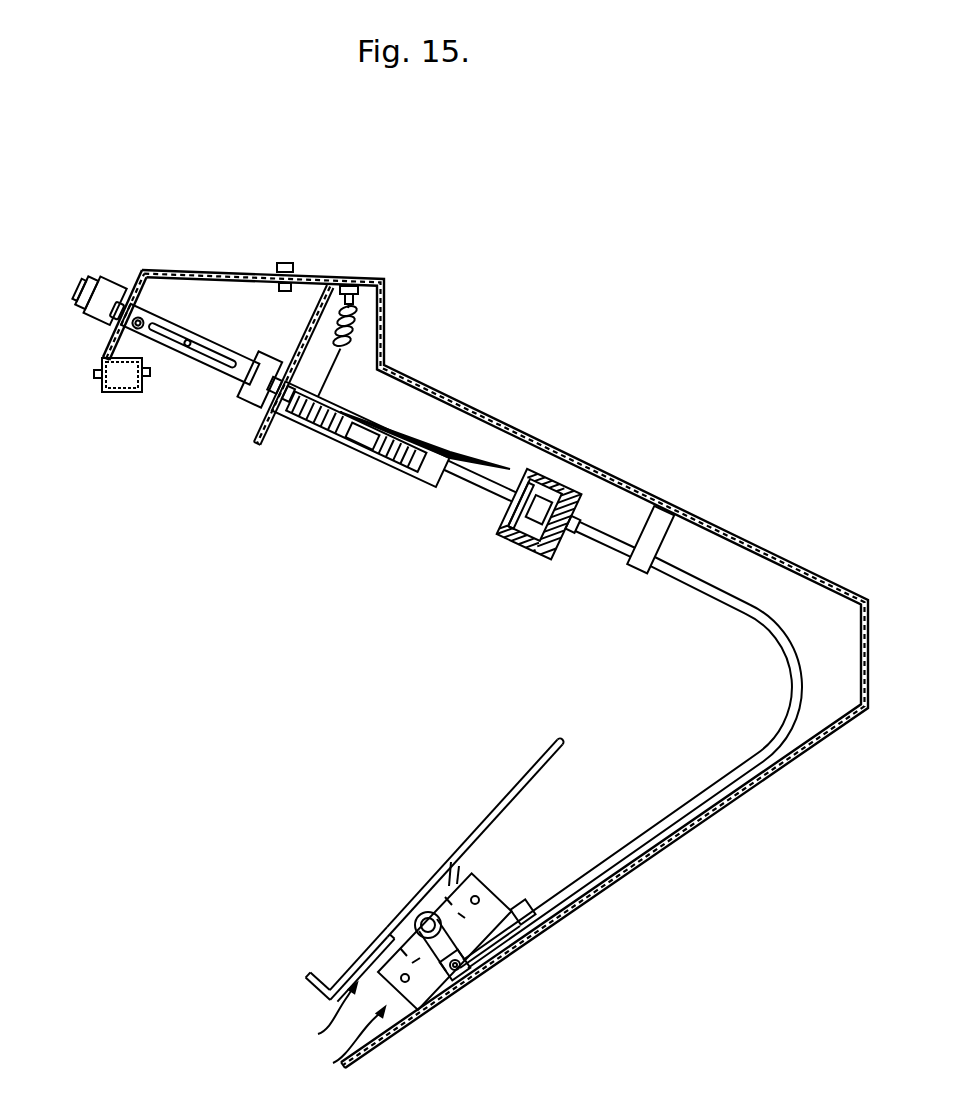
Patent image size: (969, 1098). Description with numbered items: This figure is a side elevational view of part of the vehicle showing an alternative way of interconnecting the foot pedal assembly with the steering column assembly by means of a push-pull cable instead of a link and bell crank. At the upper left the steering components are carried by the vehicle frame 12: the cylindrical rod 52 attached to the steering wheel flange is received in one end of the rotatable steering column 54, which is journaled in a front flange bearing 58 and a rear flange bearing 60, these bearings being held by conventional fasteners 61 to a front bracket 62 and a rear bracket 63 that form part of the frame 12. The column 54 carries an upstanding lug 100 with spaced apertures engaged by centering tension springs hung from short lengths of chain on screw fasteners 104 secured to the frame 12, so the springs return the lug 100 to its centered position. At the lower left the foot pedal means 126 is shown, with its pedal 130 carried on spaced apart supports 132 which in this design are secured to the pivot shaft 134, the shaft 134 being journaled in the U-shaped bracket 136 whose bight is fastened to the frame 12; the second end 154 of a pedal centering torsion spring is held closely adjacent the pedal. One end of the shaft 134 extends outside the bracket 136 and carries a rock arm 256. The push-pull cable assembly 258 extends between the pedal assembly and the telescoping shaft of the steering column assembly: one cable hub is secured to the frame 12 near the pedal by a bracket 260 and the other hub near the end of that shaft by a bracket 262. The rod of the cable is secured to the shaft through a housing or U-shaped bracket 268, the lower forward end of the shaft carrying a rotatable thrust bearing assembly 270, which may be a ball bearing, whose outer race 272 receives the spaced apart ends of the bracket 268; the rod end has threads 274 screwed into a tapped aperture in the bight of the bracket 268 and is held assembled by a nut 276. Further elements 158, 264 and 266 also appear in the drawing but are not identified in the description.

The vehicle frame 12 is at (264, 270).
The cylindrical rod 52 is at (80, 318).
The rotatable steering column 54 is at (185, 320).
The front flange bearing 58 is at (257, 407).
The rear flange bearing 60 is at (140, 270).
The conventional fasteners 61 is at (108, 312).
The front bracket 62 is at (313, 315).
The rear bracket 63 is at (142, 300).
The upstanding lug 100 is at (334, 362).
The screw fasteners 104 is at (358, 298).
The foot pedal means 126 is at (317, 1015).
The pedal 130 is at (340, 975).
The spaced apart supports 132 is at (418, 895).
The pivot shaft 134 is at (418, 918).
The U-shaped bracket 136 is at (337, 1042).
The second end of torsion spring 154 is at (360, 963).
The lever extension 158 is at (468, 841).
The rock arm 256 is at (440, 963).
The push-pull cable assembly 258 is at (772, 685).
The bracket 260 is at (518, 903).
The bracket 262 is at (637, 572).
The cable end wire 264 is at (466, 975).
The cable end nut 266 is at (463, 990).
The U-shaped bracket 268 is at (531, 554).
The rotatable thrust bearing assembly 270 is at (488, 521).
The outer race 272 is at (512, 539).
The threads 274 is at (571, 489).
The nut 276 is at (571, 526).